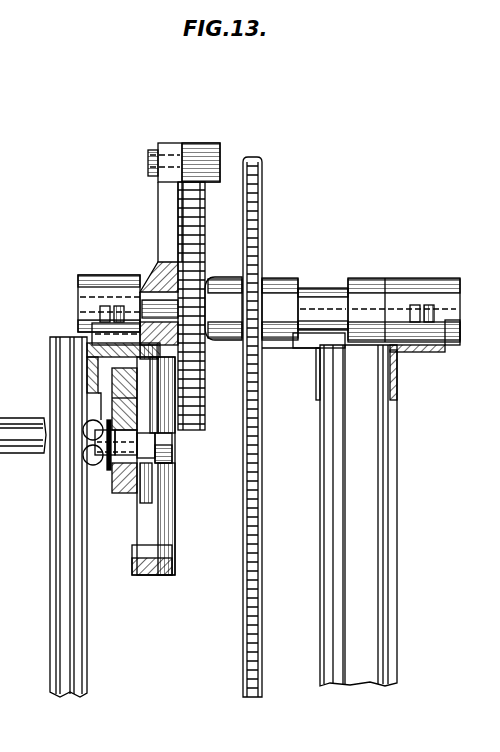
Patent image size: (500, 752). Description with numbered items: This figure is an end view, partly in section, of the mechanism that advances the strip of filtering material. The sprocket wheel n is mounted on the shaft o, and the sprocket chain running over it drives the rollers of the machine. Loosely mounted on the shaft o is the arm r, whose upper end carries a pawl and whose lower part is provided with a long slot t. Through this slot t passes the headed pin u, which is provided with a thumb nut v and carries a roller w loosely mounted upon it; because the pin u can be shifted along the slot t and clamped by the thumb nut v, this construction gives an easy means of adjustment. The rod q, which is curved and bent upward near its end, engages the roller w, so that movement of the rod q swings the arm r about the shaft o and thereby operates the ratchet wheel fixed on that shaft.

The arm r is at (162, 214).
The sprocket wheel n is at (268, 208).
The shaft o is at (333, 296).
The rod q is at (112, 378).
The thumb nut v is at (86, 457).
The roller w is at (112, 482).
The headed pin u is at (175, 461).
The long slot t is at (142, 528).